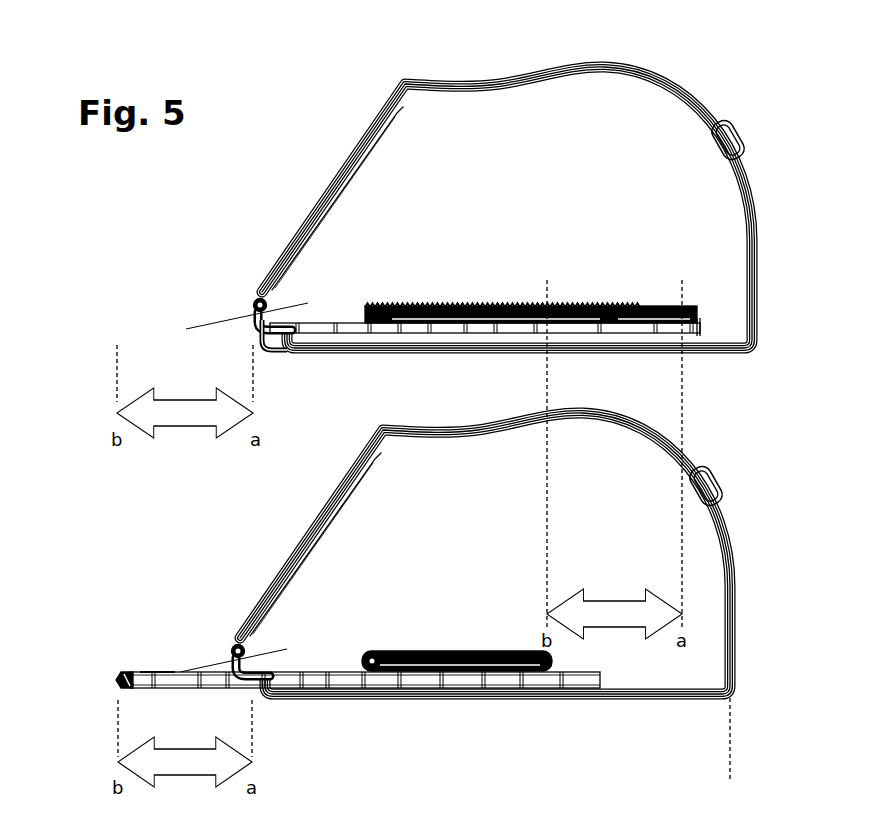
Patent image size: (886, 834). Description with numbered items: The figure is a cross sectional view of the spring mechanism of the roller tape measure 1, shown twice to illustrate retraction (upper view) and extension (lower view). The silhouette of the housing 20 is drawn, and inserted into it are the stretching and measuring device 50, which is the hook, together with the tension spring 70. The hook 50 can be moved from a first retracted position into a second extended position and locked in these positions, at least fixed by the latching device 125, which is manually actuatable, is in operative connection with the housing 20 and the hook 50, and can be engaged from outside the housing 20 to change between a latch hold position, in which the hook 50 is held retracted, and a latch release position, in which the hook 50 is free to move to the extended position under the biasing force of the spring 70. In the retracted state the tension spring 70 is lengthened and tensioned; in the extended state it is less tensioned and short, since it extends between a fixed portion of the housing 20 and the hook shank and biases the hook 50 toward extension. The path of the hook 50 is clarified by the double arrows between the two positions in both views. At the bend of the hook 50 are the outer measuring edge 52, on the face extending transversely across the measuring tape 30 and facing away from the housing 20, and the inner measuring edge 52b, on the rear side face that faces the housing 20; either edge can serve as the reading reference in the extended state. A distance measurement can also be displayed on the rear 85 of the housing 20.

The roller tape measure 1 is at (792, 96).
The housing 20 is at (686, 96).
The measuring tape 30 is at (208, 321).
The stretching and measuring device 50 is at (263, 351).
The outer measuring edge 52 is at (118, 689).
The inner measuring edge 52b is at (155, 671).
The tension spring 70 is at (511, 303).
The rear of the housing 85 is at (730, 753).
The latching device 125 is at (476, 303).